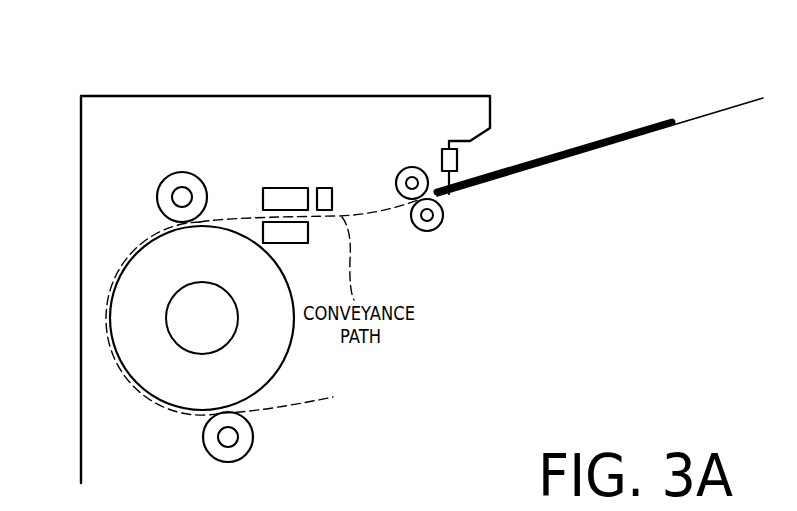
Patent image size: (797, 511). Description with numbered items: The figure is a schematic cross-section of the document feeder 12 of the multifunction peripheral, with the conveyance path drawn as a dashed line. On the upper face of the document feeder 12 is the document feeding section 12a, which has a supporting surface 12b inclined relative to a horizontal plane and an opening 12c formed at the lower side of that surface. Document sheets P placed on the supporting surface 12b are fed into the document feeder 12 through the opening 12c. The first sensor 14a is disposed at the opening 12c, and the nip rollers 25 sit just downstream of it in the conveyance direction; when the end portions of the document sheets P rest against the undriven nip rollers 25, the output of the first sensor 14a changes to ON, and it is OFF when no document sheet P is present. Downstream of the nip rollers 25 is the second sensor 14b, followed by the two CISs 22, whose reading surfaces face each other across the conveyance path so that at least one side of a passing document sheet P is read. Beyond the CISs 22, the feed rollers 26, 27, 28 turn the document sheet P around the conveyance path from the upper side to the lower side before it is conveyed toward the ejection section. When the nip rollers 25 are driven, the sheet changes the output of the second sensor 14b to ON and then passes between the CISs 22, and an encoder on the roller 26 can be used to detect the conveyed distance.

The document feeder 12 is at (80, 150).
The document feeding section 12a is at (631, 68).
The supporting surface 12b is at (695, 118).
The opening 12c is at (480, 167).
The first sensor 14a is at (443, 150).
The second sensor 14b is at (322, 188).
The CISs 22 is at (304, 226).
The nip rollers 25 is at (432, 217).
The feed roller 26 is at (263, 353).
The feed roller 27 is at (173, 189).
The feed roller 28 is at (242, 443).
The document sheet P is at (613, 135).